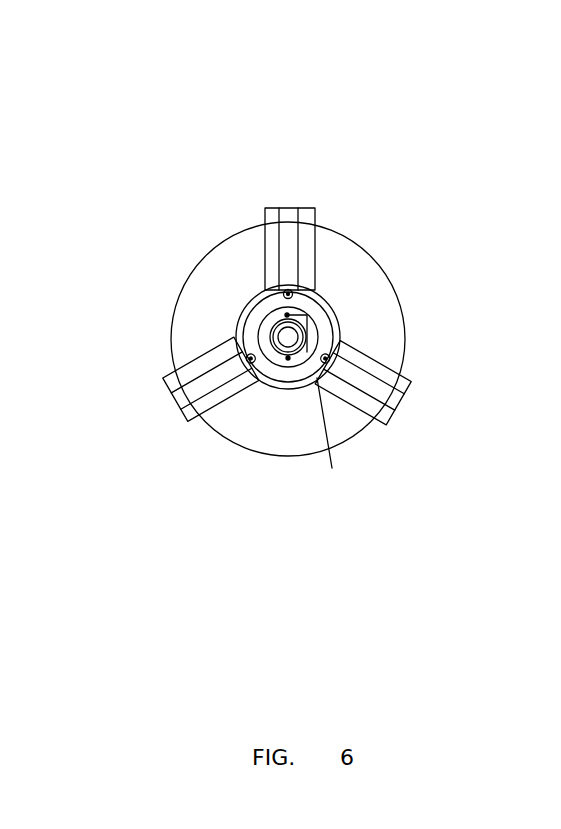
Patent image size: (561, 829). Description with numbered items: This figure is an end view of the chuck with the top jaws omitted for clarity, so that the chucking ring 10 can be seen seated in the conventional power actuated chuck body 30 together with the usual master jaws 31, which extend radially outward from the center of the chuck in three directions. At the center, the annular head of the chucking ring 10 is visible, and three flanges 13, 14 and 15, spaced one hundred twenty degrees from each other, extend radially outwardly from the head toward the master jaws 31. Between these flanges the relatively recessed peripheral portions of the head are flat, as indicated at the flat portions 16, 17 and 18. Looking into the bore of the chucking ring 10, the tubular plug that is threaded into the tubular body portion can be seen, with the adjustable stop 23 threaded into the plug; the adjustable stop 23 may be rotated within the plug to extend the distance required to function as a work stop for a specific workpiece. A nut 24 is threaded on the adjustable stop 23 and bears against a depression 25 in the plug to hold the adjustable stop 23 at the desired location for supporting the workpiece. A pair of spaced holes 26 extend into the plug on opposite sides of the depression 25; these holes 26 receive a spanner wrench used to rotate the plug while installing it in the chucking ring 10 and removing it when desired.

The chucking ring 10 is at (328, 320).
The flange 13 is at (310, 292).
The flange 14 is at (333, 343).
The flange 15 is at (259, 368).
The flat peripheral portion 16 is at (340, 324).
The flat peripheral portion 17 is at (298, 362).
The flat peripheral portion 18 is at (258, 322).
The adjustable stop 23 is at (264, 313).
The nut 24 is at (238, 341).
The depression 25 is at (270, 357).
The spaced holes 26 is at (289, 360).
The chuck body 30 is at (230, 233).
The master jaws 31 is at (268, 233).